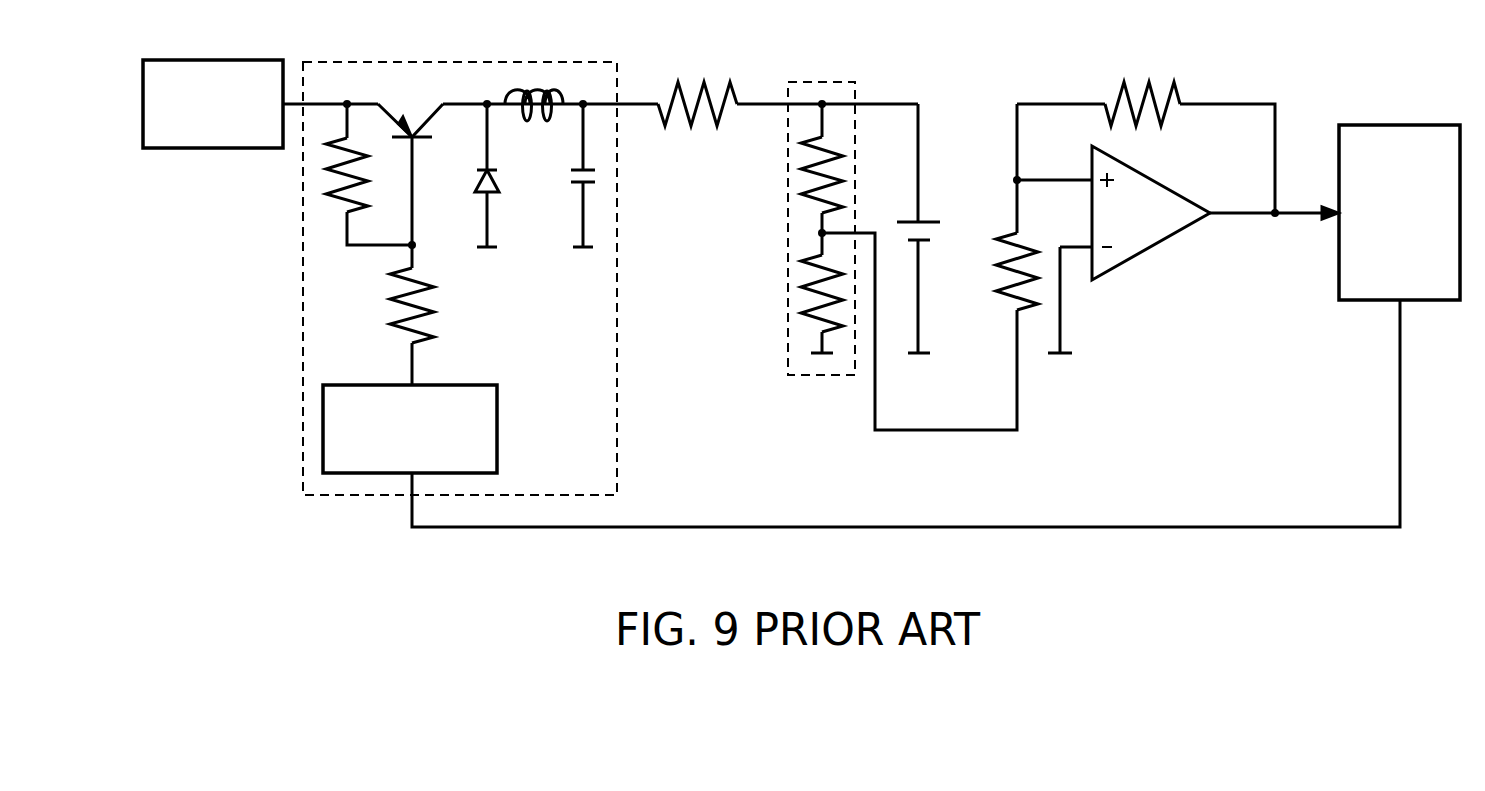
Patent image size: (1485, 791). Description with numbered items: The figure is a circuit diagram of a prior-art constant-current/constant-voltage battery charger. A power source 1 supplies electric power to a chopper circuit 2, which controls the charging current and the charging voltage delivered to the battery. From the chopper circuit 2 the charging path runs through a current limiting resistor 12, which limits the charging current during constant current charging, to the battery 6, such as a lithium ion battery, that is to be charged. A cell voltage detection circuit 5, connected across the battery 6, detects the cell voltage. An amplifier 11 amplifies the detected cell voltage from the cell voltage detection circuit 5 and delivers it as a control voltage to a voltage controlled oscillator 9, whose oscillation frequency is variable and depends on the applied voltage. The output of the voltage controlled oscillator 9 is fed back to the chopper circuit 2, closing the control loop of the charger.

The power source 1 is at (195, 60).
The chopper circuit 2 is at (437, 62).
The current limiting resistor 12 is at (705, 82).
The cell voltage detection circuit 5 is at (810, 82).
The battery 6 is at (930, 212).
The amplifier 11 is at (1175, 188).
The voltage controlled oscillator 9 is at (1365, 125).